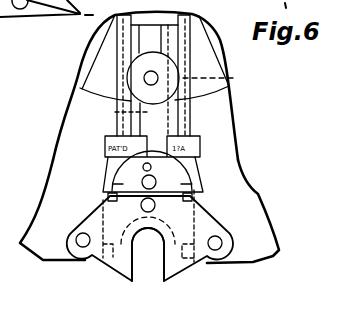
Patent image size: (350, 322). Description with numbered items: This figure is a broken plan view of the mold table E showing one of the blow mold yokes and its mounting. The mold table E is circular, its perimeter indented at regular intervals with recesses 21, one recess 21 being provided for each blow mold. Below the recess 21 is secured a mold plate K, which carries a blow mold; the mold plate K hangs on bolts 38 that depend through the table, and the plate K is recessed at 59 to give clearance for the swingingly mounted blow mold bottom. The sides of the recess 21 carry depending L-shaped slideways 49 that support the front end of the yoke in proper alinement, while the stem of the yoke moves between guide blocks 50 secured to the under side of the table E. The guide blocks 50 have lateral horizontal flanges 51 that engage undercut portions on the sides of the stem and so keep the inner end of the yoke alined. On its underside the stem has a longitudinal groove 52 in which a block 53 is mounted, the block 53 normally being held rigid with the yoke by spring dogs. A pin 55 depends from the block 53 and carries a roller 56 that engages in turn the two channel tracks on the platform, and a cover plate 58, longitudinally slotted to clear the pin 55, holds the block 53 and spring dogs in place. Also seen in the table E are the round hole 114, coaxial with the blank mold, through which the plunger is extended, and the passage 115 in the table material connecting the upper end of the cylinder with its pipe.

The guide block 50 is at (200, 38).
The lateral horizontal flange 51 is at (233, 78).
The longitudinal groove 52 is at (118, 108).
The block 53 is at (140, 121).
The pin 55 is at (147, 78).
The roller 56 is at (138, 61).
The cover plate 58 is at (185, 112).
The round hole 114 is at (142, 182).
The passage 115 is at (143, 167).
The L-shaped slideway 49 is at (97, 208).
The recess 21 is at (195, 203).
The bolt 38 is at (80, 248).
The recess of mold plate 59 is at (148, 254).
The mold plate K is at (176, 267).
The mold table E is at (149, 211).